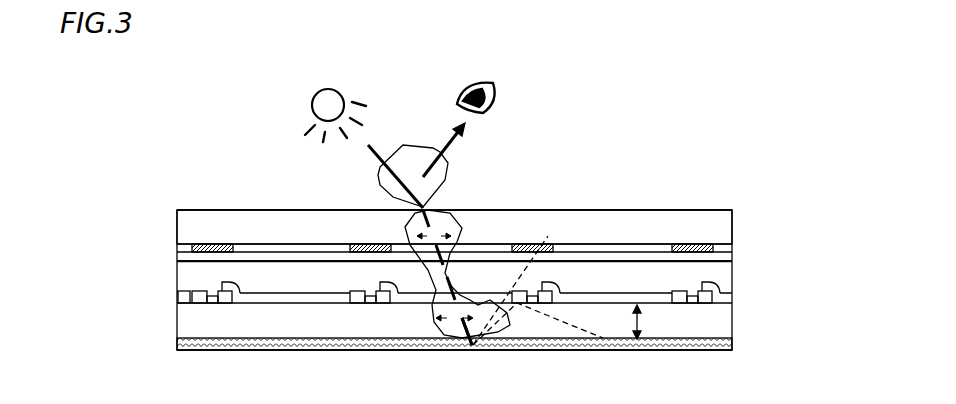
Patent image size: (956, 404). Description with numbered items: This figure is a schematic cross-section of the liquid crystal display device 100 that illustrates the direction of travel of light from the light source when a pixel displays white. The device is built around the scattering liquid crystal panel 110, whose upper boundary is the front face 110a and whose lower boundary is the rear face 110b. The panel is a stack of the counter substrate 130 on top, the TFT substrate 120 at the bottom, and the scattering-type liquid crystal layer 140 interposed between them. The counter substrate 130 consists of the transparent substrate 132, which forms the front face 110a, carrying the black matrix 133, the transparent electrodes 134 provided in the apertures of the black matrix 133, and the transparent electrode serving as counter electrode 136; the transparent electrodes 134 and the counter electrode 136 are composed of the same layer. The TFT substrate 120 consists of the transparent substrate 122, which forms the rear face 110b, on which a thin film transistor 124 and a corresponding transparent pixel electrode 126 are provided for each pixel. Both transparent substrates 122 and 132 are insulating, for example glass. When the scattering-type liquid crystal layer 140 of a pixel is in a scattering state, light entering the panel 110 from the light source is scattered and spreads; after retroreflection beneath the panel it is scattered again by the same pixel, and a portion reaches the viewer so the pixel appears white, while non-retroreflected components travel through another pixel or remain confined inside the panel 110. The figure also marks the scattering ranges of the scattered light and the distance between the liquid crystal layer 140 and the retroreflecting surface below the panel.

The liquid crystal display device 100 is at (763, 187).
The scattering liquid crystal panel 110 is at (170, 210).
The front face 110a is at (577, 210).
The rear face 110b is at (172, 339).
The TFT substrate 120 is at (735, 288).
The transparent substrate 122 is at (668, 327).
The thin film transistor 124 is at (233, 303).
The transparent electrode (pixel electrode) 126 is at (318, 298).
The counter substrate 130 is at (735, 210).
The transparent substrate 132 is at (685, 217).
The black matrix 133 is at (215, 243).
The transparent electrodes 134 is at (267, 248).
The transparent electrode (counter electrode) 136 is at (300, 257).
The scattering-type liquid crystal layer 140 is at (723, 275).